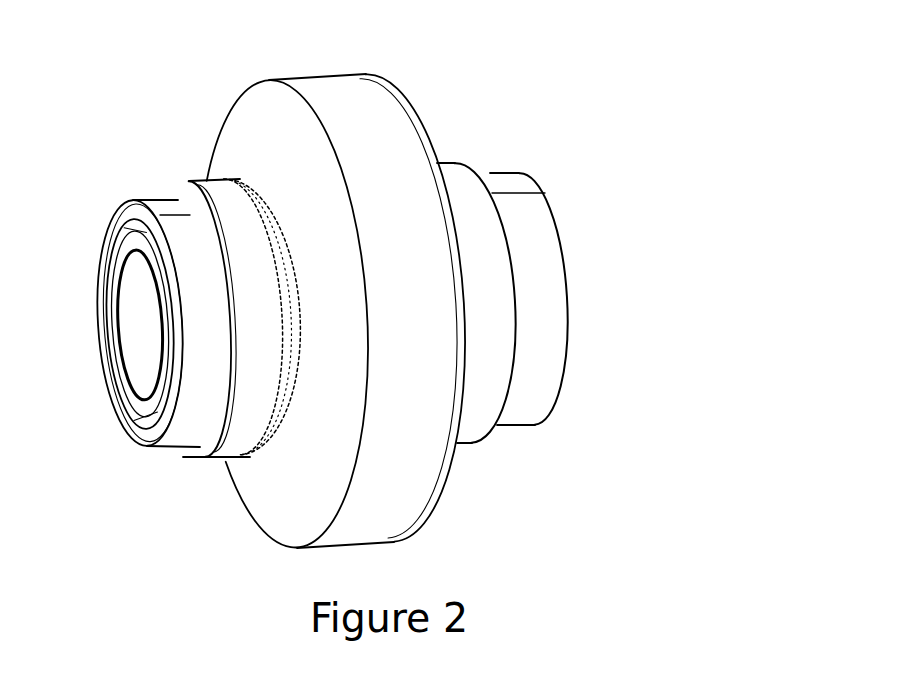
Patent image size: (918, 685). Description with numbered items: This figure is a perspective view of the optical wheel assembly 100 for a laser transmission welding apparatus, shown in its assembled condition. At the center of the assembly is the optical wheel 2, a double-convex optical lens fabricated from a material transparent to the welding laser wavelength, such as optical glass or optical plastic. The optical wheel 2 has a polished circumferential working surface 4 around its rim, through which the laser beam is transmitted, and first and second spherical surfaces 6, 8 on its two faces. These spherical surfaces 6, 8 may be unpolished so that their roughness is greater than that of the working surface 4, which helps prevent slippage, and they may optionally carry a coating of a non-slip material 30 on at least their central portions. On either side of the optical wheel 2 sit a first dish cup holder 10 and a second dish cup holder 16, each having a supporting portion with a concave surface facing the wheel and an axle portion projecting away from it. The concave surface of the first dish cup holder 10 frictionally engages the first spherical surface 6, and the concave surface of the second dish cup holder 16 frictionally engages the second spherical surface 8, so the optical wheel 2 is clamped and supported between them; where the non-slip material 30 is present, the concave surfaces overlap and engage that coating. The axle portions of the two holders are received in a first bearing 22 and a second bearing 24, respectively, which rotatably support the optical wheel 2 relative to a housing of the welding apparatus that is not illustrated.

The optical wheel 2 is at (214, 110).
The circumferential working surface 4 is at (372, 110).
The first spherical surface 6 is at (277, 493).
The second spherical surface 8 is at (456, 410).
The first dish cup holder 10 is at (243, 445).
The second dish cup holder 16 is at (470, 176).
The first bearing 22 is at (165, 208).
The second bearing 24 is at (549, 305).
The non-slip material 30 is at (293, 382).
The optical wheel assembly 100 is at (664, 441).